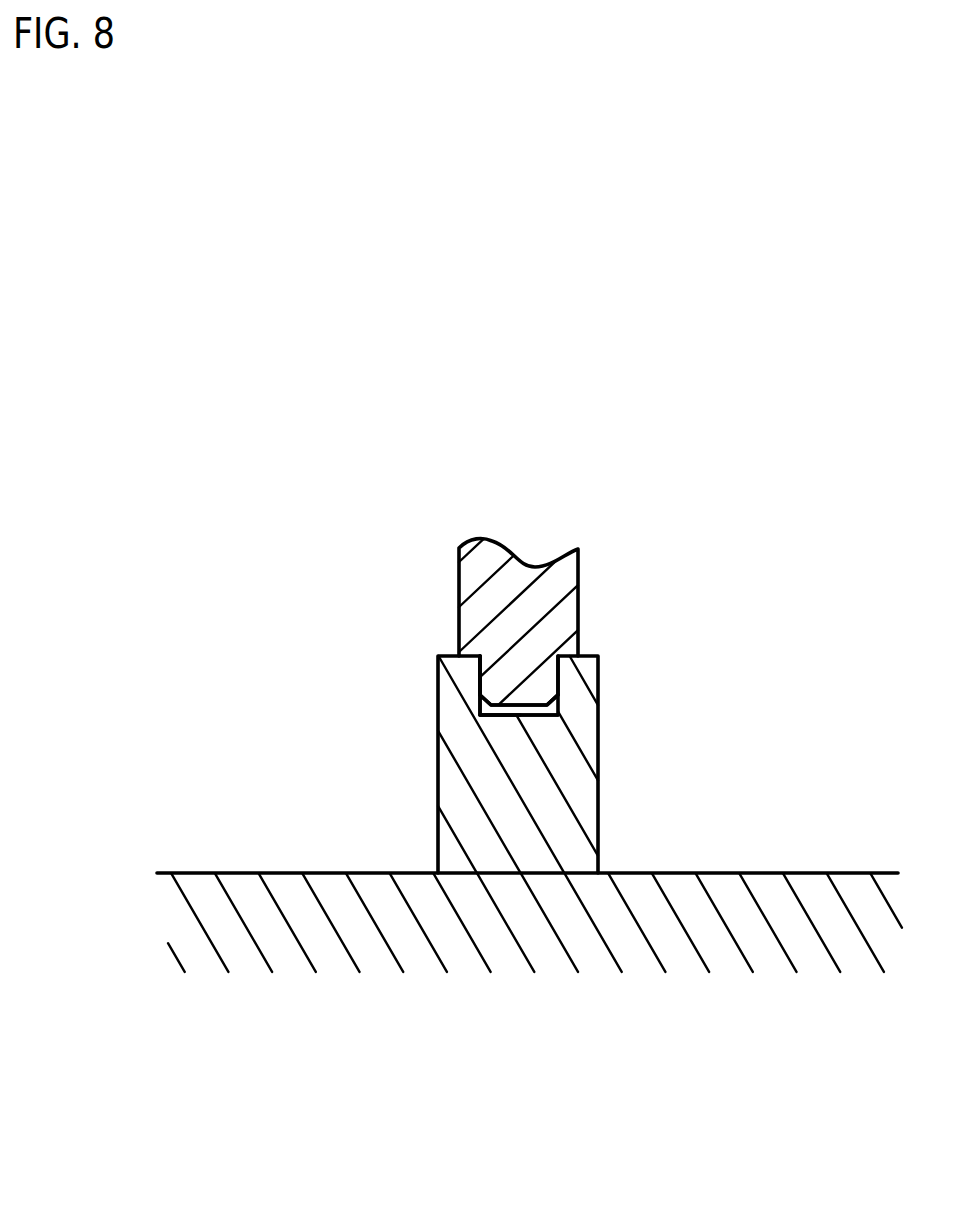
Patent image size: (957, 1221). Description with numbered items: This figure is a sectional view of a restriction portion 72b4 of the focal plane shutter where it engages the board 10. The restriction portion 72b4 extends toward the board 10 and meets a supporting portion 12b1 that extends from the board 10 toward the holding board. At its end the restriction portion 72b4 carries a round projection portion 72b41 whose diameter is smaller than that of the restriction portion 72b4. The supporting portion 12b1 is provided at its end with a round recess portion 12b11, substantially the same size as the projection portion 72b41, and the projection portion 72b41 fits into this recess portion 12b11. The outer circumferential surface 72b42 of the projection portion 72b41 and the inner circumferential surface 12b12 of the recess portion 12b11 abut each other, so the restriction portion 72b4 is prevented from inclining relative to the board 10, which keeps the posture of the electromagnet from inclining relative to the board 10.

The board 10 is at (319, 872).
The supporting portion 12b1 is at (565, 789).
The recess portion 12b11 is at (540, 713).
The inner circumferential surface 12b12 is at (502, 717).
The restriction portion 72b4 is at (555, 594).
The projection portion 72b41 is at (527, 683).
The outer circumferential surface 72b42 is at (480, 678).